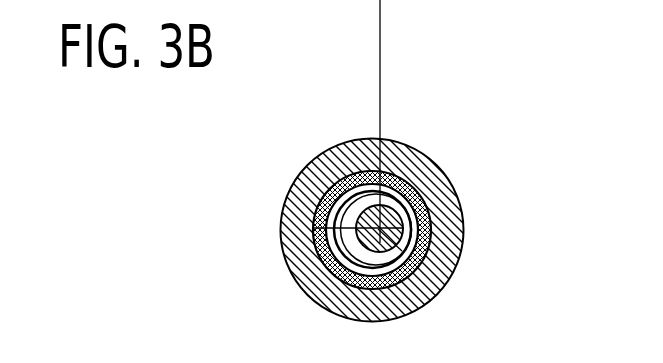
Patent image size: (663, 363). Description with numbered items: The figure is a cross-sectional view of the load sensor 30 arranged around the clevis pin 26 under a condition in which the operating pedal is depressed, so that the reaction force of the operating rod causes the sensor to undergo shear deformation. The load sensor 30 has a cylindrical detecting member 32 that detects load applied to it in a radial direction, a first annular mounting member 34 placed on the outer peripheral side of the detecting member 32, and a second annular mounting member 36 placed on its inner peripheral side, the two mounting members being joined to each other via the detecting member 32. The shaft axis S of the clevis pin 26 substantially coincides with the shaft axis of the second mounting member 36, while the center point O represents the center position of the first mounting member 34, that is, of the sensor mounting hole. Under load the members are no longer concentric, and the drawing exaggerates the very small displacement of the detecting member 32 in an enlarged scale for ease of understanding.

The load sensor 30 is at (461, 147).
The clevis pin 26 is at (333, 166).
The detecting member 32 is at (313, 228).
The first annular mounting member 34 is at (308, 283).
The second annular mounting member 36 is at (403, 228).
The center point O is at (378, 229).
The shaft axis S is at (409, 249).